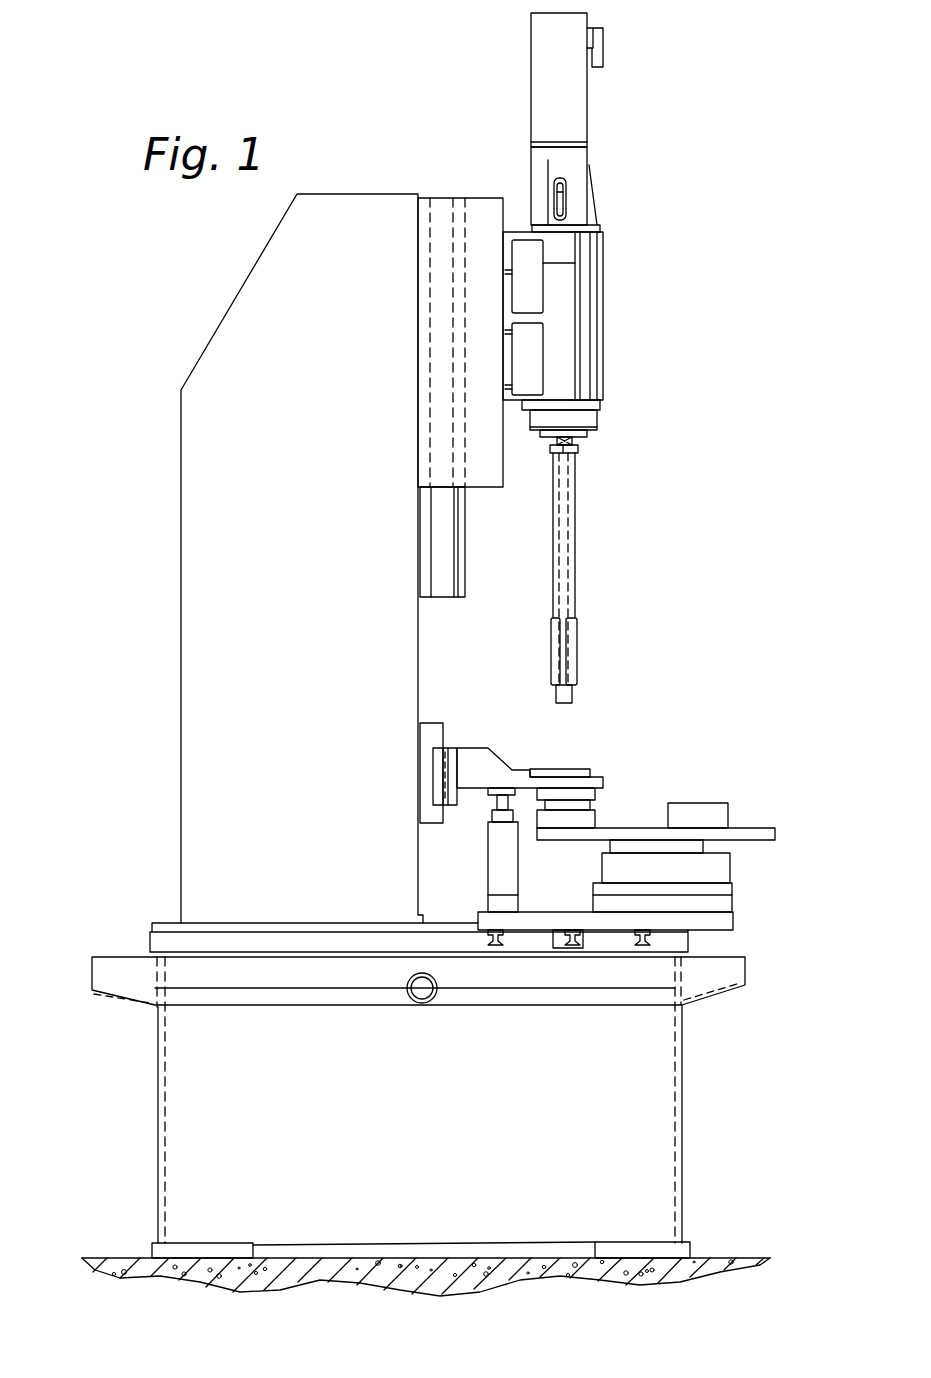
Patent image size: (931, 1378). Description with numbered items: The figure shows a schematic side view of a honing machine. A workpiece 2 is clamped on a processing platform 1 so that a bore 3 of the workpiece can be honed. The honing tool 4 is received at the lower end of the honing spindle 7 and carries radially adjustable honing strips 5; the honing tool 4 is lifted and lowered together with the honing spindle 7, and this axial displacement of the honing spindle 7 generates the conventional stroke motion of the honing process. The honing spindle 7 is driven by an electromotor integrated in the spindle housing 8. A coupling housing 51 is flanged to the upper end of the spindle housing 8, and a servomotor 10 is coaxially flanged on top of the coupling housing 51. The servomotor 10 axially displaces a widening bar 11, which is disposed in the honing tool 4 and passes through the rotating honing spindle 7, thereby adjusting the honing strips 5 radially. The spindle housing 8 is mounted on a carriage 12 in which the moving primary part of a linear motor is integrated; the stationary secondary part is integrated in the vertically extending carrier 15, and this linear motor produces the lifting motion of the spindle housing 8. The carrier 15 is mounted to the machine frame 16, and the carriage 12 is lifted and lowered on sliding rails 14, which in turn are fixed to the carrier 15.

The processing platform 1 is at (675, 937).
The workpiece 2 is at (590, 818).
The bore 3 is at (578, 770).
The honing tool 4 is at (572, 515).
The honing strips 5 is at (574, 665).
The honing spindle 7 is at (578, 451).
The spindle housing 8 is at (566, 300).
The servomotor 10 is at (541, 107).
The widening bar 11 is at (570, 565).
The carriage 12 is at (472, 360).
The sliding rails 14 is at (463, 585).
The carrier 15 is at (445, 473).
The machine frame 16 is at (197, 782).
The coupling housing 51 is at (575, 162).